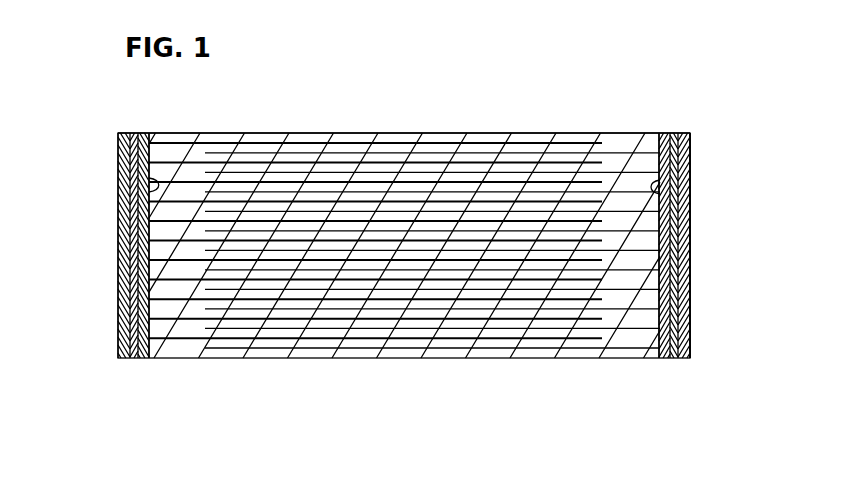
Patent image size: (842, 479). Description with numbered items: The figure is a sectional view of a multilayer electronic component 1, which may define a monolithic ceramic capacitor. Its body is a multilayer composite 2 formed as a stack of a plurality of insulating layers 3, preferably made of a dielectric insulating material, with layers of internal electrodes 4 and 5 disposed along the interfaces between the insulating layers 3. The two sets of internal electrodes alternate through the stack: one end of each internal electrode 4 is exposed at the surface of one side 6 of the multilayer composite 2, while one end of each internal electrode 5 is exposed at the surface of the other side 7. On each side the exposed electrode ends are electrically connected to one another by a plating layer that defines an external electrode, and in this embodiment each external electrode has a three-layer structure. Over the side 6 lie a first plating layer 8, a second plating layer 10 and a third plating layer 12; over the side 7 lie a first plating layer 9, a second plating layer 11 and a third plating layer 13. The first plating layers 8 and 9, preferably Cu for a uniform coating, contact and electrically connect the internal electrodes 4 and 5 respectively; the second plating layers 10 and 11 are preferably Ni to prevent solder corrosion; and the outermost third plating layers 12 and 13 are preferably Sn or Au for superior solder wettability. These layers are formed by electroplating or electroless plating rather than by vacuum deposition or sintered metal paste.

The multilayer electronic component 1 is at (392, 126).
The multilayer composite 2 is at (523, 133).
The insulating layers 3 is at (692, 143).
The internal electrodes 4 is at (188, 340).
The internal electrodes 5 is at (625, 348).
The one side 6 is at (127, 181).
The other side 7 is at (655, 188).
The first plating layer 8 is at (135, 340).
The first plating layer 9 is at (683, 330).
The second plating layer 10 is at (130, 295).
The second plating layer 11 is at (682, 298).
The third plating layer 12 is at (118, 252).
The third plating layer 13 is at (682, 257).